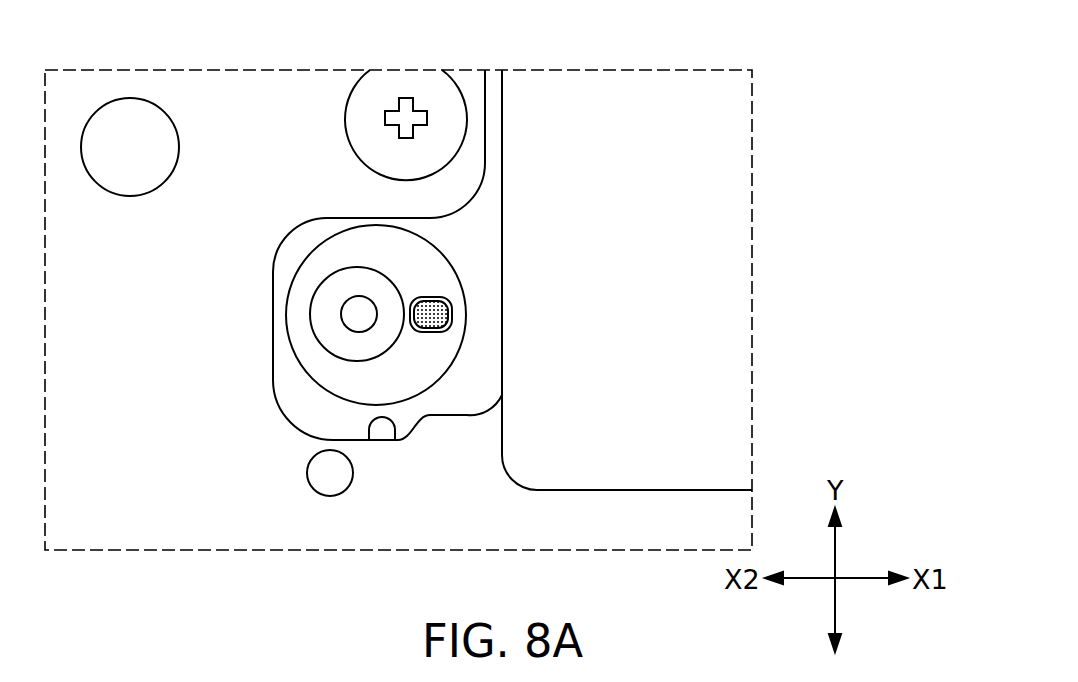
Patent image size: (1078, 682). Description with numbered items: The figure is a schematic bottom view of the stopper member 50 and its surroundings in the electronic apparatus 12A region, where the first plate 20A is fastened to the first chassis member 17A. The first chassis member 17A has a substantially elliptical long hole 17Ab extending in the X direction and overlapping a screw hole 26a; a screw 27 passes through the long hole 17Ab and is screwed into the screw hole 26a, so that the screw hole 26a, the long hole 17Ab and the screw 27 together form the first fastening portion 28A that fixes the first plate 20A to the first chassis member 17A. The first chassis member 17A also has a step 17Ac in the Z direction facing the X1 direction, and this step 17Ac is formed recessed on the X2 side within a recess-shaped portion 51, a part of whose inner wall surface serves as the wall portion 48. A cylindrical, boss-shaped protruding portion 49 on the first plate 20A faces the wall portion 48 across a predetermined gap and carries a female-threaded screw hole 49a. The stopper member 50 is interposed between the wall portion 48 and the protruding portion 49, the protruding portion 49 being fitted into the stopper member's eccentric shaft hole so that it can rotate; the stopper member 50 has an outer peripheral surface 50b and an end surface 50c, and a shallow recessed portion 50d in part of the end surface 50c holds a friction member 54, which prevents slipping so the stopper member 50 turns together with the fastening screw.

The image forming apparatus / unit 12A is at (98, 34).
The first chassis member 17A is at (221, 92).
The screw 27 is at (453, 90).
The long hole 17Ab is at (453, 90).
The screw hole 26a is at (453, 90).
The first fastening portion 28A is at (483, 21).
The step 17Ac is at (488, 110).
The first plate 20A is at (498, 208).
The wall portion 48 is at (281, 272).
The protruding portion 49 is at (335, 293).
The screw hole 49a is at (355, 313).
The stopper member 50 is at (439, 315).
The friction member 54 is at (444, 301).
The recessed portion 50d is at (453, 317).
The outer peripheral surface 50b is at (458, 363).
The end surface 50c is at (422, 372).
The recess-shaped portion 51 is at (395, 440).